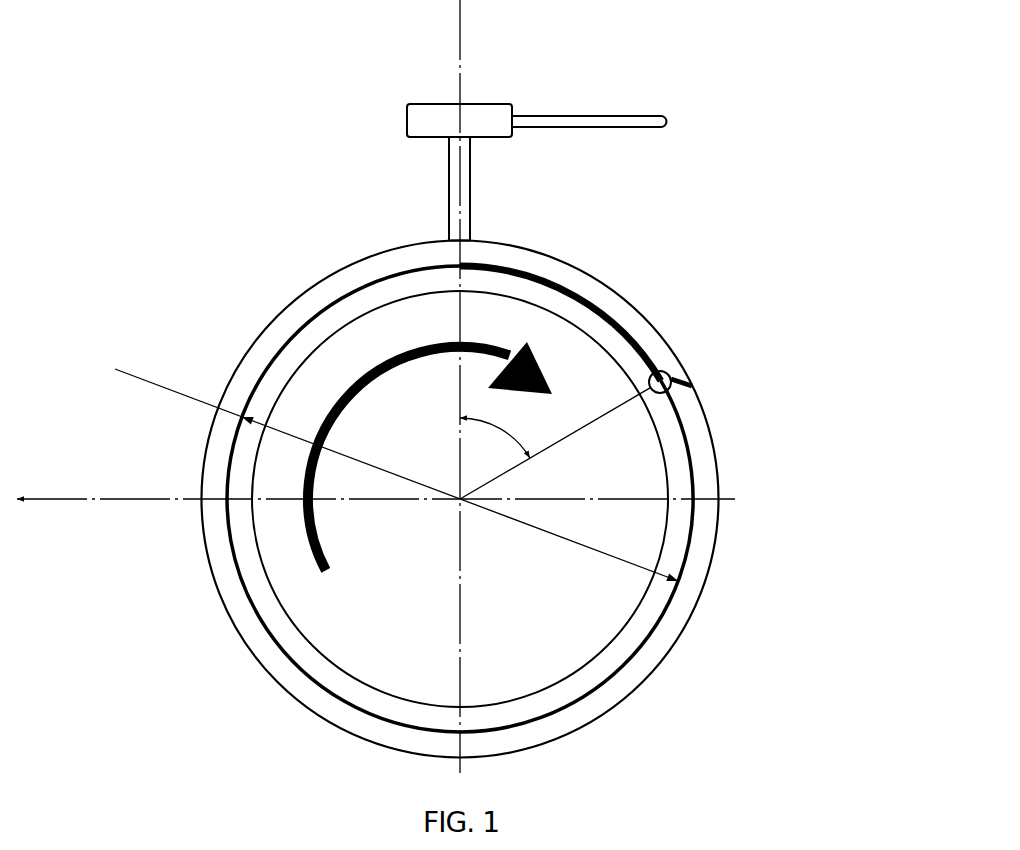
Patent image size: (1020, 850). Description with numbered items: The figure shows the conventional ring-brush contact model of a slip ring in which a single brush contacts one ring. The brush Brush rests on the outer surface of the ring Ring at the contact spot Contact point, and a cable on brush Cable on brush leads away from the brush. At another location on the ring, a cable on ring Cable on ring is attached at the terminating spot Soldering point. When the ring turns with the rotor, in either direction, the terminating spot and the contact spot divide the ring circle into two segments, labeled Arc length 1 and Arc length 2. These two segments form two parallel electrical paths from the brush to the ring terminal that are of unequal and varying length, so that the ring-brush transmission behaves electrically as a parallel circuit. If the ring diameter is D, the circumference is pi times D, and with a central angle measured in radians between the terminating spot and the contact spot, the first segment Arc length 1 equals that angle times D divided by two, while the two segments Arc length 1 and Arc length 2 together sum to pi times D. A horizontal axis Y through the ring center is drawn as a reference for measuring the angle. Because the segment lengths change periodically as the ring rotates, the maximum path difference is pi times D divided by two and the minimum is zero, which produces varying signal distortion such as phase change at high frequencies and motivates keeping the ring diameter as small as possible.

The brush Brush is at (433, 103).
The cable on brush Cable on brush is at (887, 65).
The ring Ring is at (286, 306).
The contact spot between brush and ring Contact point is at (685, 186).
The arc length 1 Arc length 1 is at (803, 252).
The terminating spot of the cable on ring Soldering point is at (865, 320).
The cable on ring Cable on ring is at (935, 408).
The arc length 2 Arc length 2 is at (243, 592).
The ring diameter D is at (115, 369).
The Y axis Y is at (376, 482).